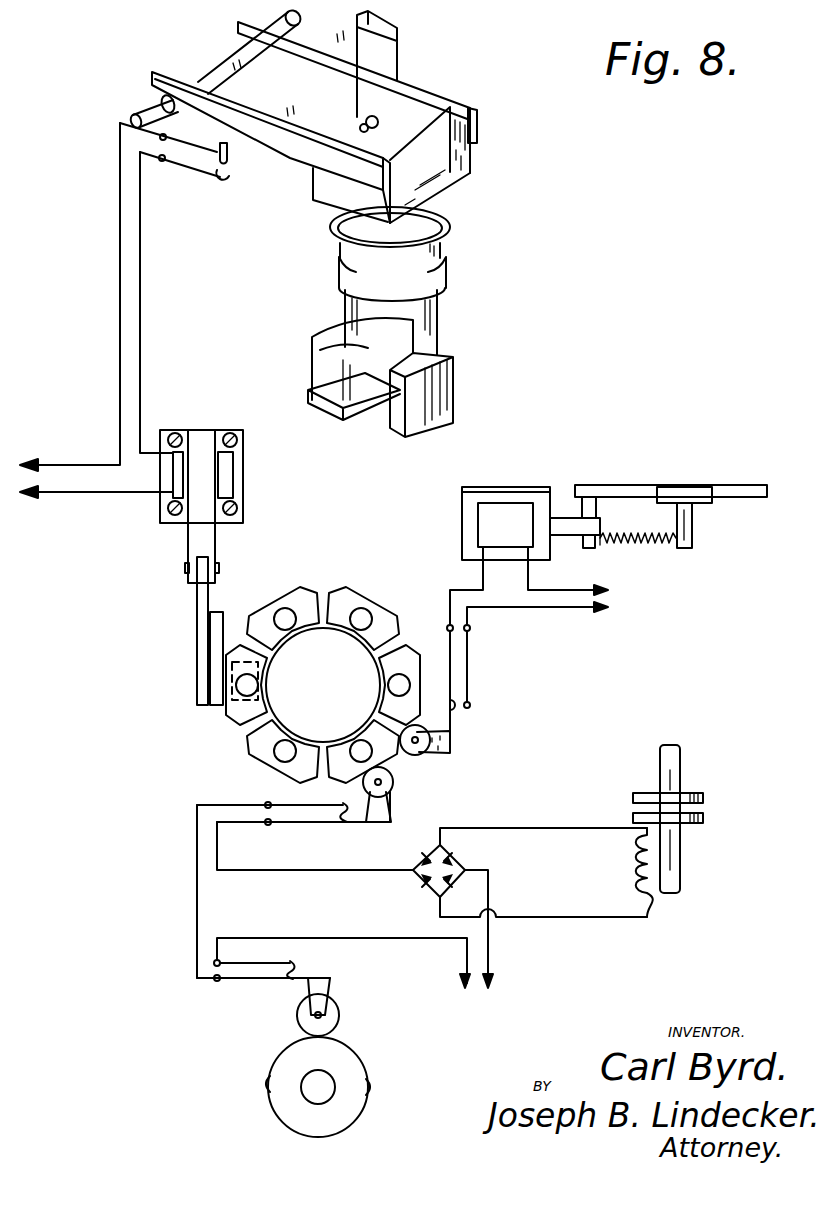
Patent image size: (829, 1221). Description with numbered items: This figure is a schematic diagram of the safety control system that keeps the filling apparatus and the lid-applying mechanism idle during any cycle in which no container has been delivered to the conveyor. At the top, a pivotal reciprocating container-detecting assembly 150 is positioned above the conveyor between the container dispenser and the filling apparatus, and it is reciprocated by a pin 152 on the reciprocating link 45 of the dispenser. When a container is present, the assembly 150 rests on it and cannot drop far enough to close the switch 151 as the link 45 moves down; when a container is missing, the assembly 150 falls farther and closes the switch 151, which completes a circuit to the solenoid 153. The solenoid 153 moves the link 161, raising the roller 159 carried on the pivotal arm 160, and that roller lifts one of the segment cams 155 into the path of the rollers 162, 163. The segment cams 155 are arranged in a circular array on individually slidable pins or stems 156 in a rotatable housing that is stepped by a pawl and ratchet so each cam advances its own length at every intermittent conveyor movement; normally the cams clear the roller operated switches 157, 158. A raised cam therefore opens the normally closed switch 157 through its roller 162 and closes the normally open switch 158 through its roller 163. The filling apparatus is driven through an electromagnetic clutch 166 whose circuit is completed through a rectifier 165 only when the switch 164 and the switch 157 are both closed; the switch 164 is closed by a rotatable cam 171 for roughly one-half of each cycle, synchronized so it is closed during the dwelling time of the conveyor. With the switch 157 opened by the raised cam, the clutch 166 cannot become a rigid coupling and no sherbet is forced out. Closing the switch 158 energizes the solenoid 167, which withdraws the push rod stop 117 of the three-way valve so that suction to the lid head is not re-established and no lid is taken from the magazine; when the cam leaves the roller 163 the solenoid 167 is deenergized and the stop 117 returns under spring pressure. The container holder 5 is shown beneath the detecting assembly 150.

The reciprocating link 45 is at (393, 47).
The container-detecting assembly 150 is at (448, 90).
The pin 152 is at (363, 120).
The switch 151 is at (183, 172).
The container holder 5 is at (435, 347).
The solenoid 153 is at (235, 482).
The link 161 is at (202, 632).
The pivotal arm 160 is at (215, 658).
The roller 159 is at (240, 703).
The slidable pins or stems 156 is at (284, 607).
The segment cams 155 is at (350, 598).
The roller 163 is at (426, 757).
The roller 162 is at (392, 791).
The roller operated switch 158 is at (466, 683).
The solenoid 167 is at (470, 505).
The push rod stop 117 is at (623, 492).
The electromagnetic clutch 166 is at (633, 798).
The rectifier 165 is at (463, 865).
The switch 157 is at (298, 812).
The switch 164 is at (300, 955).
The rotatable cam 171 is at (360, 1073).